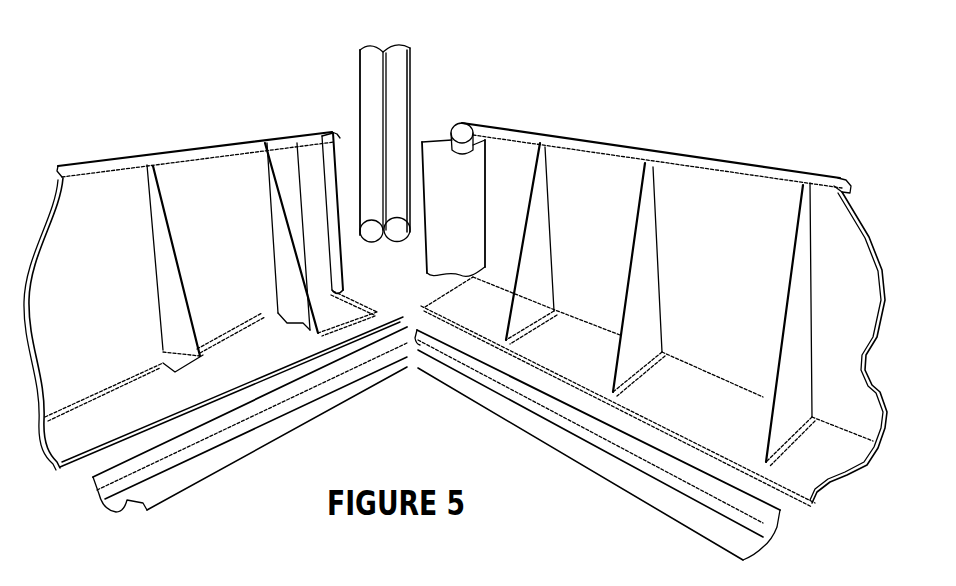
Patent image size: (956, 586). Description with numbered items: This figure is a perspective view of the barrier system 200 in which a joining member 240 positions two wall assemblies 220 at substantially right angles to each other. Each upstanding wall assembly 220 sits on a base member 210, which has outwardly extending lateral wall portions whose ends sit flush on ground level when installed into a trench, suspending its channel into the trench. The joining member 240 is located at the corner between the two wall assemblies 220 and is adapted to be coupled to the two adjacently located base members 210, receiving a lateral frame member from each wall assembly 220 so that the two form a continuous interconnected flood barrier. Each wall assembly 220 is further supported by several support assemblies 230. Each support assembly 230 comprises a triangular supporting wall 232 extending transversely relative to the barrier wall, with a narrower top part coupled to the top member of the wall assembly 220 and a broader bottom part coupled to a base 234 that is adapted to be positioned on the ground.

The barrier system 200 is at (232, 138).
The base member 210 is at (143, 502).
The wall assembly 220 is at (262, 138).
The support assembly 230 is at (847, 262).
The supporting wall 232 is at (265, 302).
The base of the support assembly 234 is at (183, 378).
The joining member 240 is at (355, 83).